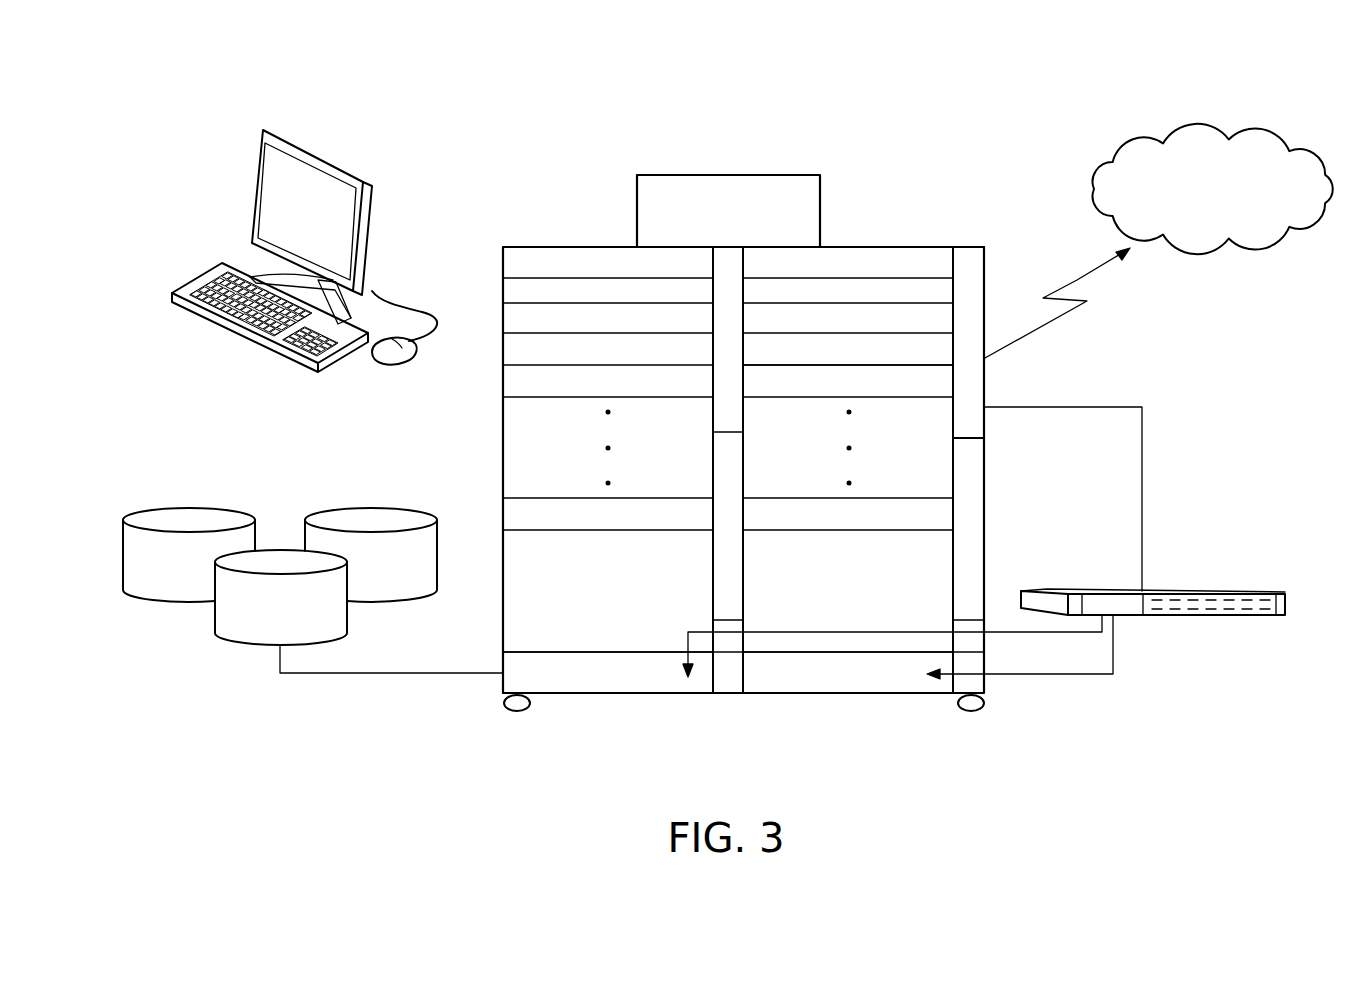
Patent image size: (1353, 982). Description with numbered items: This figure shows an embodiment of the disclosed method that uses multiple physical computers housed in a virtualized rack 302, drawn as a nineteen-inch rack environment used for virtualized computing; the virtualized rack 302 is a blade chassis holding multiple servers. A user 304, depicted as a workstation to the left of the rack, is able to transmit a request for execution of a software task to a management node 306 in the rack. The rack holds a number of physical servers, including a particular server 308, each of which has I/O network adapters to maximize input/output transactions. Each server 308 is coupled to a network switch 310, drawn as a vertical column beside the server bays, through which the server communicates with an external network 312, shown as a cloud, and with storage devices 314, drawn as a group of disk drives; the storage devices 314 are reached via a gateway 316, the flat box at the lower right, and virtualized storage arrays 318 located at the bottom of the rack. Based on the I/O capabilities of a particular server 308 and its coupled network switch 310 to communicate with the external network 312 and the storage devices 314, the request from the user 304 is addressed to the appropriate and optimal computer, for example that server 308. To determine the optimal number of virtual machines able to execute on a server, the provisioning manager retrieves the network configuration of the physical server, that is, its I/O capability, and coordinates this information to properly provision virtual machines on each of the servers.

The virtualized rack 302 is at (726, 175).
The user 304 is at (240, 145).
The management node 306 is at (552, 235).
The server 308 is at (897, 400).
The network switch 310 is at (969, 253).
The external network 312 is at (1145, 131).
The storage devices 314 is at (232, 660).
The gateway 316 is at (1188, 617).
The virtualized storage arrays 318 is at (596, 694).